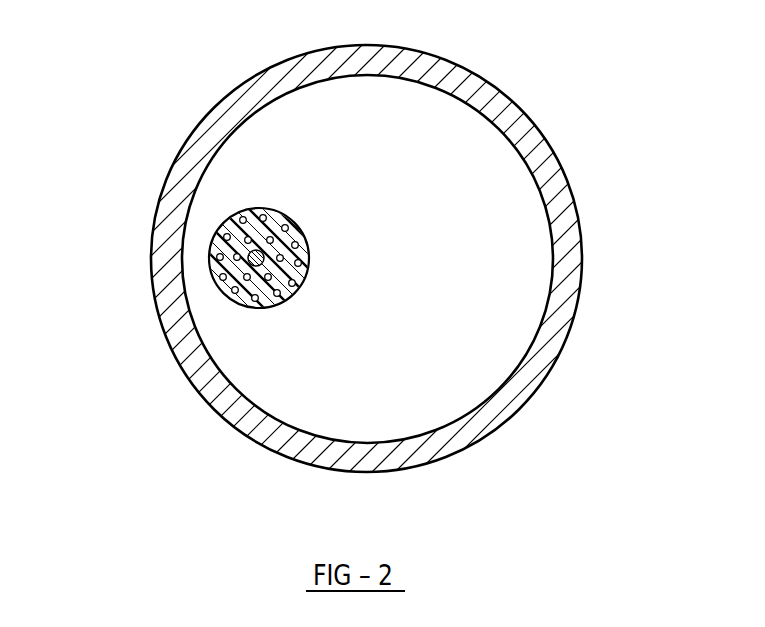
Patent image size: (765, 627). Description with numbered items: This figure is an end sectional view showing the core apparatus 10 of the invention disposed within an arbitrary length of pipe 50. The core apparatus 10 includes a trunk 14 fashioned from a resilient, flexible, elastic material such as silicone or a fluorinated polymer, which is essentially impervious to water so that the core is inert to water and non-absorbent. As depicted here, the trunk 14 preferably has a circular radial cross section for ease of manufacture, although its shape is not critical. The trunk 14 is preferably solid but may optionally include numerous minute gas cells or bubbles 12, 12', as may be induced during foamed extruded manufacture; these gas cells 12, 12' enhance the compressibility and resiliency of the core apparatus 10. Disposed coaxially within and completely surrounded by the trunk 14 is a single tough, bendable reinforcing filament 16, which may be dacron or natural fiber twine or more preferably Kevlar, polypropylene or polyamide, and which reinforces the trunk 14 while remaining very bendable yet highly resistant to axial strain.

The pipe 50 is at (542, 132).
The core apparatus 10 is at (210, 266).
The gas cell 12' is at (159, 176).
The gas cell 12 is at (144, 213).
The trunk 14 is at (257, 301).
The reinforcing filament 16 is at (250, 264).